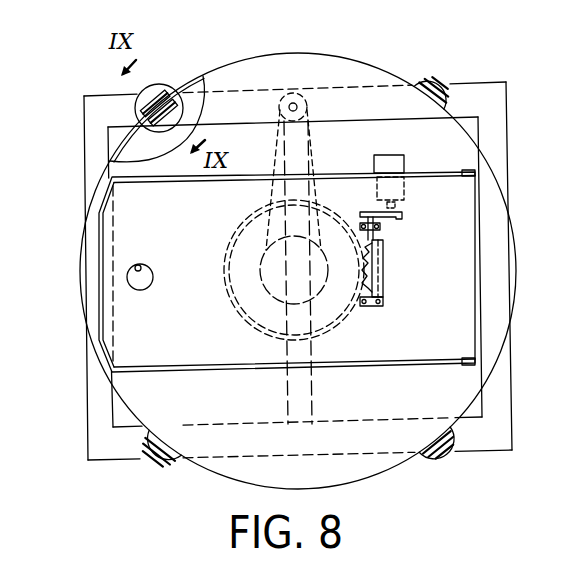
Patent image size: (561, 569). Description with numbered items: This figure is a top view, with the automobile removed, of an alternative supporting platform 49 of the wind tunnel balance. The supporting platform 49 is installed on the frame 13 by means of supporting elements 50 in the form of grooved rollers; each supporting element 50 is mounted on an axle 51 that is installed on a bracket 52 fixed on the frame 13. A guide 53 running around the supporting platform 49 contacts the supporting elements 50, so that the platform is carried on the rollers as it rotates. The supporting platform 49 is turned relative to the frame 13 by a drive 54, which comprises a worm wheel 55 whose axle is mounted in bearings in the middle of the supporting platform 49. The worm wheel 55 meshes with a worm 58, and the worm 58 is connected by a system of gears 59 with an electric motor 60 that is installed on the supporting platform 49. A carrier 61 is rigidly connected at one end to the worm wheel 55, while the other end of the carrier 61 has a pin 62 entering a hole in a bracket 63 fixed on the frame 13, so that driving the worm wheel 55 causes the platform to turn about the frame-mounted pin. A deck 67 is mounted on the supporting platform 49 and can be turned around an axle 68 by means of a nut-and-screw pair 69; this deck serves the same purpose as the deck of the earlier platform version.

The frame 13 is at (213, 447).
The supporting platform 49 is at (357, 470).
The supporting element 50 is at (160, 86).
The axle 51 is at (140, 108).
The bracket 52 is at (416, 78).
The guide 53 is at (203, 76).
The drive 54 is at (417, 193).
The worm wheel 55 is at (247, 295).
The worm 58 is at (384, 288).
The system of gears 59 is at (395, 216).
The electric motor 60 is at (403, 162).
The carrier 61 is at (299, 148).
The pin 62 is at (297, 107).
The bracket 63 is at (293, 103).
The deck 67 is at (147, 340).
The axle 68 is at (466, 365).
The nut-and-screw pair 69 is at (140, 266).